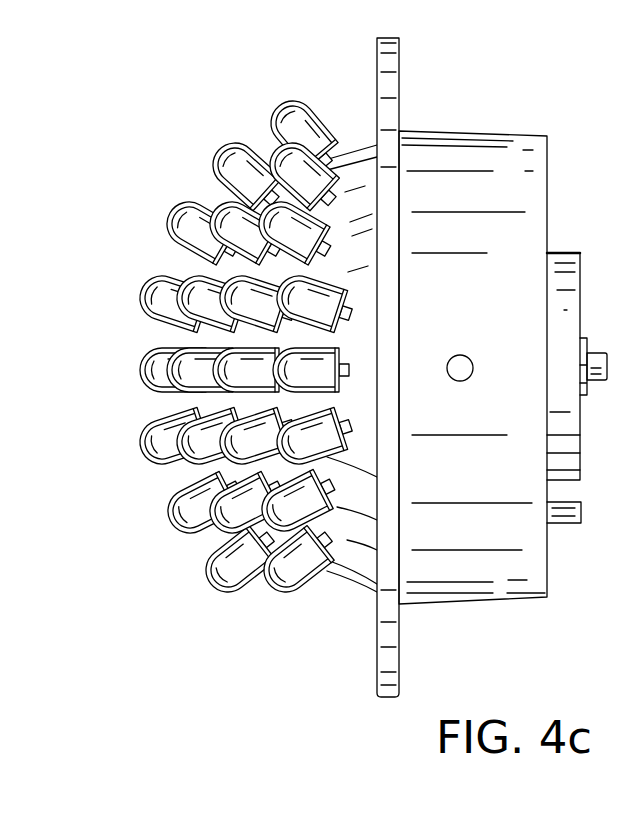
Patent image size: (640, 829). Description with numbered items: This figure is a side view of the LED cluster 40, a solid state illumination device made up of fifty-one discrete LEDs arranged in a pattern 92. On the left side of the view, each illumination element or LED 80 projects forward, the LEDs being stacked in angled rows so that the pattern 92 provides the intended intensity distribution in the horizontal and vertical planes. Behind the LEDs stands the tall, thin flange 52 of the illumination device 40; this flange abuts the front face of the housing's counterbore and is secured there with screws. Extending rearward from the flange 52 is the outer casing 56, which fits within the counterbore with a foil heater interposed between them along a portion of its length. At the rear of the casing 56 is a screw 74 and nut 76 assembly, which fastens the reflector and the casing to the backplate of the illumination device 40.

The solid state illumination device 40 is at (240, 110).
The flange 52 is at (383, 47).
The outer casing 56 is at (457, 147).
The screw 74 is at (598, 358).
The nut 76 is at (583, 338).
The illumination element or LED 80 is at (170, 283).
The pattern 92 is at (128, 370).